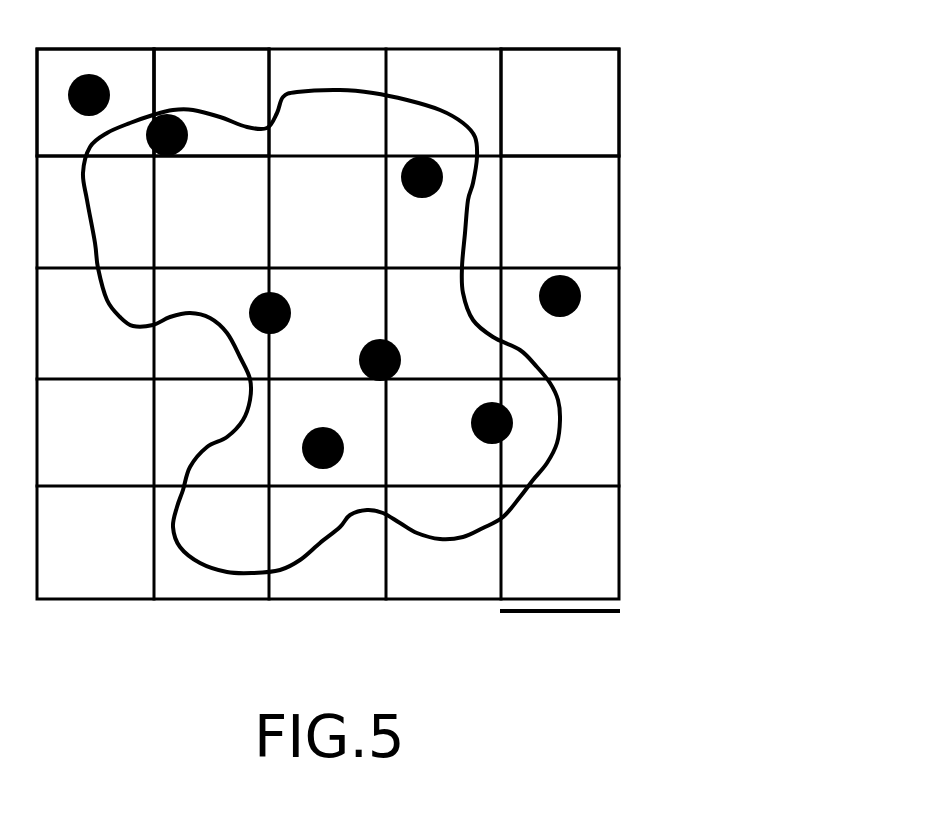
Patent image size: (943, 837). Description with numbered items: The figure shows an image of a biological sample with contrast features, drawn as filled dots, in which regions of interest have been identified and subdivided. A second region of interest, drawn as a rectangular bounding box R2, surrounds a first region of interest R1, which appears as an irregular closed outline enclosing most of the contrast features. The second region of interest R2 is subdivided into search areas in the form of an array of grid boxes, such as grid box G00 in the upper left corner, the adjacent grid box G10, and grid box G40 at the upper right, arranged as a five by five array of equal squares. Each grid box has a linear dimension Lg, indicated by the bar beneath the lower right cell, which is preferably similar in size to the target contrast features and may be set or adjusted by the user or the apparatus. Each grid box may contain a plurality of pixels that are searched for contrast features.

The second region of interest R2 is at (619, 97).
The first region of interest R1 is at (560, 417).
The linear dimension Lg is at (560, 648).
The grid box G00 is at (95, 78).
The grid box G10 is at (211, 78).
The grid box G40 is at (560, 78).